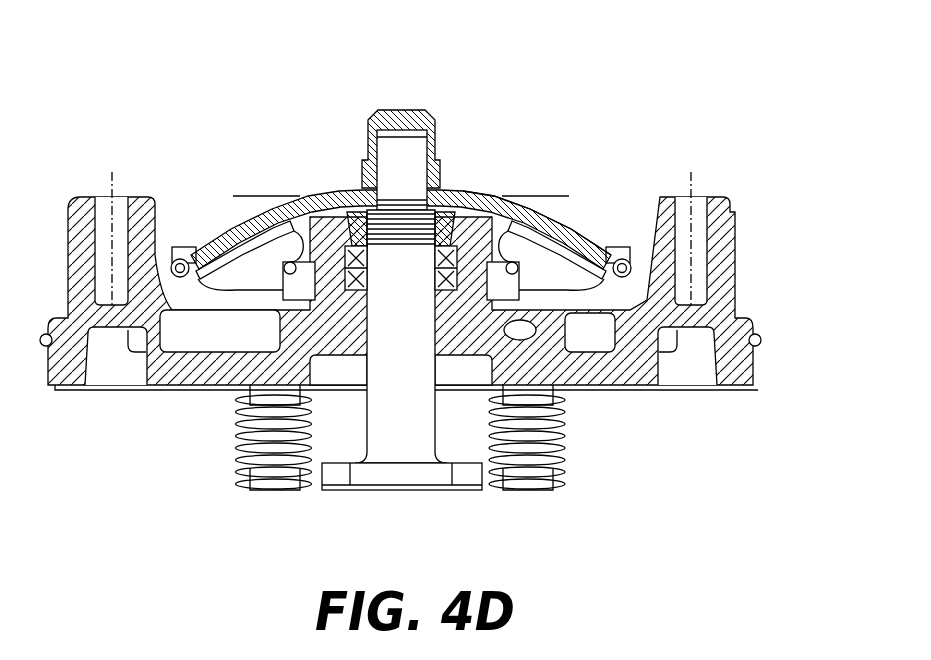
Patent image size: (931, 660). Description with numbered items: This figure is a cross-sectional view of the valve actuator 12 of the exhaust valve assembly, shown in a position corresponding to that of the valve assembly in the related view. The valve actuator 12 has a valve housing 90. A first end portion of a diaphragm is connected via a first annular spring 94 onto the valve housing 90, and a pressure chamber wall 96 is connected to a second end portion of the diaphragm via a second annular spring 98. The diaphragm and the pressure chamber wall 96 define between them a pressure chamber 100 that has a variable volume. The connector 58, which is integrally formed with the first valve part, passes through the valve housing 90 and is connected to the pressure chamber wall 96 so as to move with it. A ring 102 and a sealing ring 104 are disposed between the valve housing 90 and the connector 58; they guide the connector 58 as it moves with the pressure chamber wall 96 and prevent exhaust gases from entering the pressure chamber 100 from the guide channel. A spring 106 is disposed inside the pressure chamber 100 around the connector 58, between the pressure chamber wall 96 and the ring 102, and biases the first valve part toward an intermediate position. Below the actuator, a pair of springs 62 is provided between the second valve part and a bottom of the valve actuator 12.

The valve actuator 12 is at (736, 142).
The connector 58 is at (413, 160).
The springs 62 is at (233, 414).
The valve housing 90 is at (86, 206).
The first annular spring 94 is at (288, 266).
The pressure chamber wall 96 is at (298, 190).
The second annular spring 98 is at (622, 258).
The pressure chamber 100 is at (527, 198).
The ring 102 is at (500, 222).
The sealing ring 104 is at (346, 245).
The spring 106 is at (432, 222).